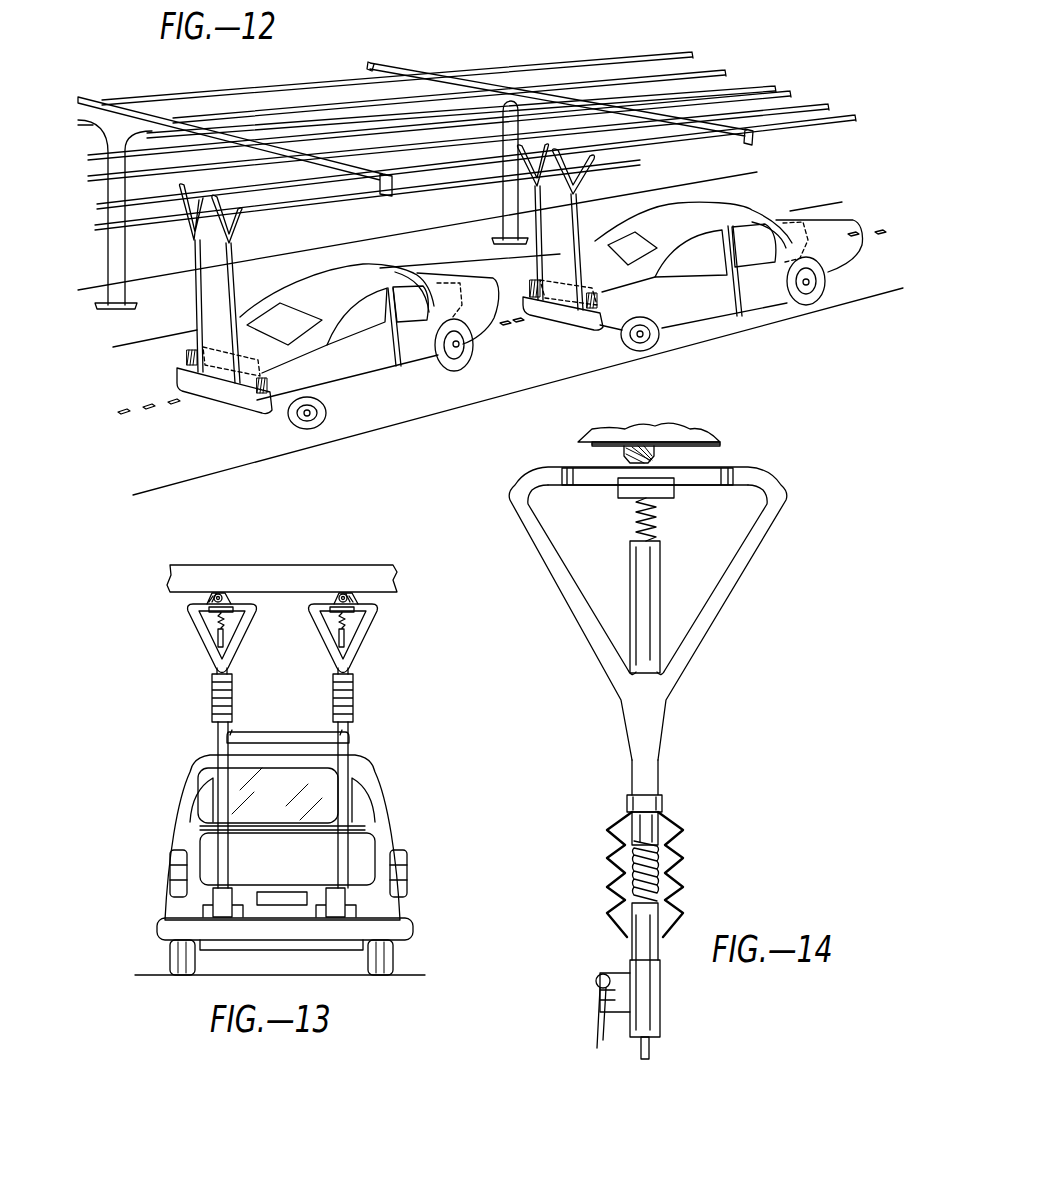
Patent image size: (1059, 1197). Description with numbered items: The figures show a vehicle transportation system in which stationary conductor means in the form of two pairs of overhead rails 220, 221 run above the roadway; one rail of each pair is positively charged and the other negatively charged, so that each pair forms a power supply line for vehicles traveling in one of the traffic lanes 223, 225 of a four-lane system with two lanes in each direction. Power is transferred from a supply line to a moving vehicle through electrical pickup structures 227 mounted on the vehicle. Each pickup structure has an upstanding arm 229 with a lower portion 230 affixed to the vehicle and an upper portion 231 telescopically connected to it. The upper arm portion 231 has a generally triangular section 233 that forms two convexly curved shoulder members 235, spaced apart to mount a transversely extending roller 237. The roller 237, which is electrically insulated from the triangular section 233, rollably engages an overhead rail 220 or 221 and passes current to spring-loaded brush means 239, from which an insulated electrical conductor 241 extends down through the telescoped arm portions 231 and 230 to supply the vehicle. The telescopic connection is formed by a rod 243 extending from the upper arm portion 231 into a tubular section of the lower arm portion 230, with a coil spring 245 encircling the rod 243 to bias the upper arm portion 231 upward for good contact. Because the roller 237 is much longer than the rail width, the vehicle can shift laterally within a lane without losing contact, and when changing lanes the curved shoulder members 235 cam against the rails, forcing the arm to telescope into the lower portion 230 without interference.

In FIG. 12, the overhead rail 220 is at (98, 178).
In FIG. 13, the overhead rail 220 is at (218, 590).
In FIG. 14, the overhead rail 220 is at (690, 457).
In FIG. 12, the overhead rail 221 is at (104, 156).
In FIG. 13, the overhead rail 221 is at (342, 590).
In FIG. 12, the traffic lane 223 is at (157, 458).
In FIG. 12, the traffic lane 225 is at (142, 365).
In FIG. 13, the electrical pickup structure 227 is at (353, 731).
In FIG. 13, the upstanding arm 229 is at (350, 678).
In FIG. 14, the upstanding arm 229 is at (660, 740).
In FIG. 13, the lower arm portion 230 is at (217, 783).
In FIG. 14, the lower arm portion 230 is at (662, 1027).
In FIG. 13, the upper arm portion 231 is at (210, 658).
In FIG. 14, the upper arm portion 231 is at (630, 733).
In FIG. 14, the triangular section 233 is at (720, 627).
In FIG. 13, the convexly curved shoulder member 235 is at (197, 610).
In FIG. 14, the convexly curved shoulder member 235 is at (510, 463).
In FIG. 13, the roller 237 is at (210, 602).
In FIG. 14, the roller 237 is at (617, 487).
In FIG. 14, the spring-loaded brush means 239 is at (665, 494).
In FIG. 14, the insulated electrical conductor 241 is at (650, 1057).
In FIG. 14, the rod 243 is at (677, 878).
In FIG. 14, the coil spring 245 is at (683, 870).